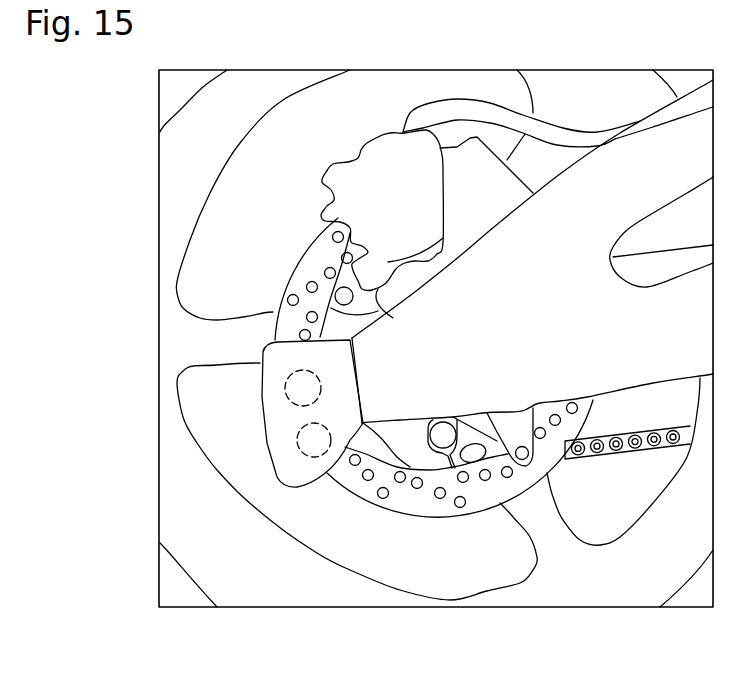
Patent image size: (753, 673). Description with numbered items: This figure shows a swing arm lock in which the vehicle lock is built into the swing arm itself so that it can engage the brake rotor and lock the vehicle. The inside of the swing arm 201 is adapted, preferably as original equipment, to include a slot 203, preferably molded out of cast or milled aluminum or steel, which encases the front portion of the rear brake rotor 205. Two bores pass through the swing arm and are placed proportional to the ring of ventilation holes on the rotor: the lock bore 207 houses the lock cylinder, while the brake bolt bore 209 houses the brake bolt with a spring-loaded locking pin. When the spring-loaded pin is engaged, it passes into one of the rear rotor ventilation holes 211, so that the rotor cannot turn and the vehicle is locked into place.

The swing arm 201 is at (393, 325).
The slot 203 is at (275, 425).
The rear brake rotor 205 is at (287, 318).
The lock bore 207 is at (285, 390).
The brake bolt bore 209 is at (302, 452).
The rear rotor ventilation holes 211 is at (485, 481).